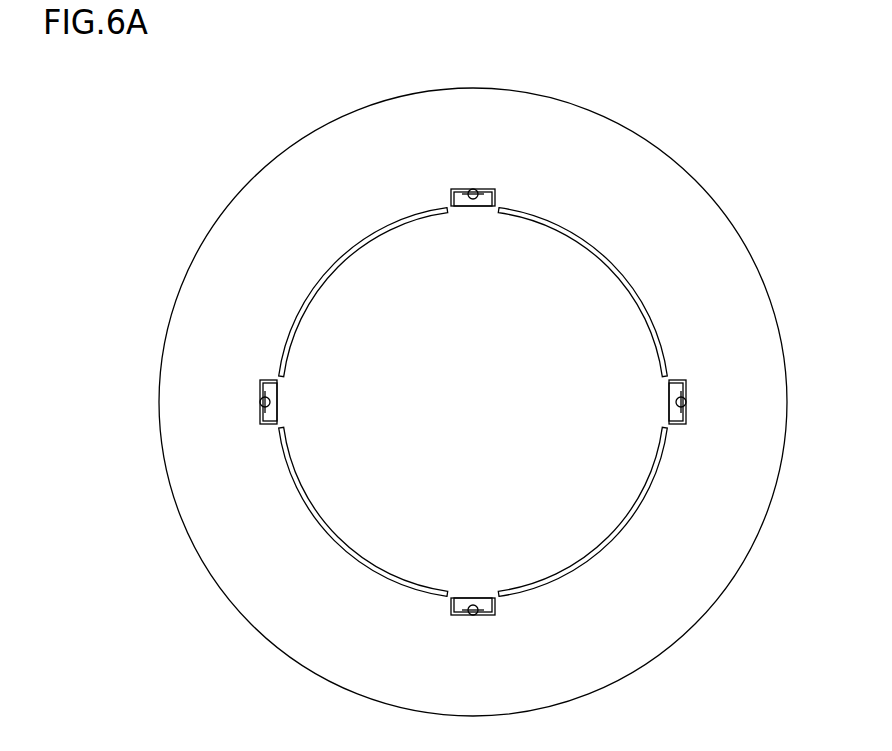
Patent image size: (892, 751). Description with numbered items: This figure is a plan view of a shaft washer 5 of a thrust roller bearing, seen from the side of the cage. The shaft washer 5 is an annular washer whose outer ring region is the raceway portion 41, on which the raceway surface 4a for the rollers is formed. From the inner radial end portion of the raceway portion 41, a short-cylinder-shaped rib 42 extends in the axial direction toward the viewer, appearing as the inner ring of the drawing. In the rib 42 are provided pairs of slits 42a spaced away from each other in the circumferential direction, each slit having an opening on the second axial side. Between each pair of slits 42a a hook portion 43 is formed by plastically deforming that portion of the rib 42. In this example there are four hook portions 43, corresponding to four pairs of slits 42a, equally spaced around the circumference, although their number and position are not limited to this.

The shaft washer 5 is at (238, 139).
The raceway portion 41 is at (645, 165).
The raceway surface 4a is at (675, 192).
The rib 42 is at (641, 287).
The slits 42a is at (447, 203).
The hook portion 43 is at (472, 190).